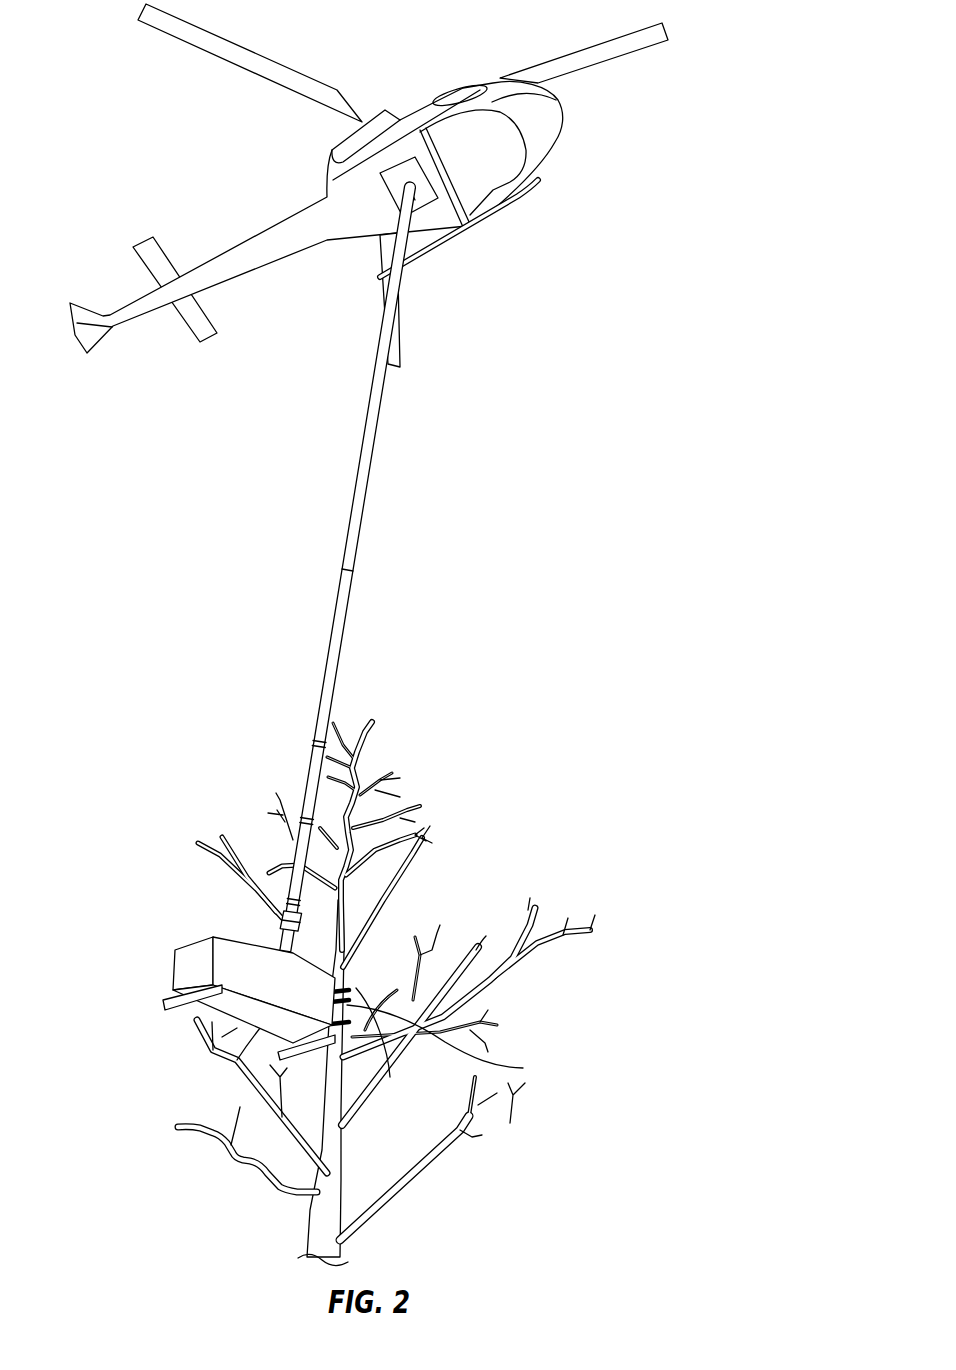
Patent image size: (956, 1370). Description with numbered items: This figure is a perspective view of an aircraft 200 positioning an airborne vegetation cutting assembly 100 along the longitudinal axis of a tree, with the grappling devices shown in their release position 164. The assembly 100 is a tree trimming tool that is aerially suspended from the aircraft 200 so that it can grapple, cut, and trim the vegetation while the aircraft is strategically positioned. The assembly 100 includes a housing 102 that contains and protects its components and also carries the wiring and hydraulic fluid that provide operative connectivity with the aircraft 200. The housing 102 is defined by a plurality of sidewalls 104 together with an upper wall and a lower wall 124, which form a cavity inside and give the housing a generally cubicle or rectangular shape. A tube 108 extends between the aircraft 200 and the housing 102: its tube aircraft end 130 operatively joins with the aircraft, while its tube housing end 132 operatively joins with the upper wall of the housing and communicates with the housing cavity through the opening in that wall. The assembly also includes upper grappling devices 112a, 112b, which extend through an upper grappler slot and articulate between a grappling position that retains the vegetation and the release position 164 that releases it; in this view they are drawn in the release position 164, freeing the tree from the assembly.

The airborne vegetation cutting assembly 100 is at (224, 893).
The housing 102 is at (224, 945).
The sidewalls 104 is at (277, 981).
The tube 108 is at (357, 552).
The upper grappling device 112a is at (462, 1042).
The upper grappling device 112b is at (390, 1077).
The lower wall 124 is at (232, 1068).
The tube aircraft end 130 is at (406, 237).
The tube housing end 132 is at (283, 913).
The release position 164 is at (355, 978).
The aircraft 200 is at (537, 137).